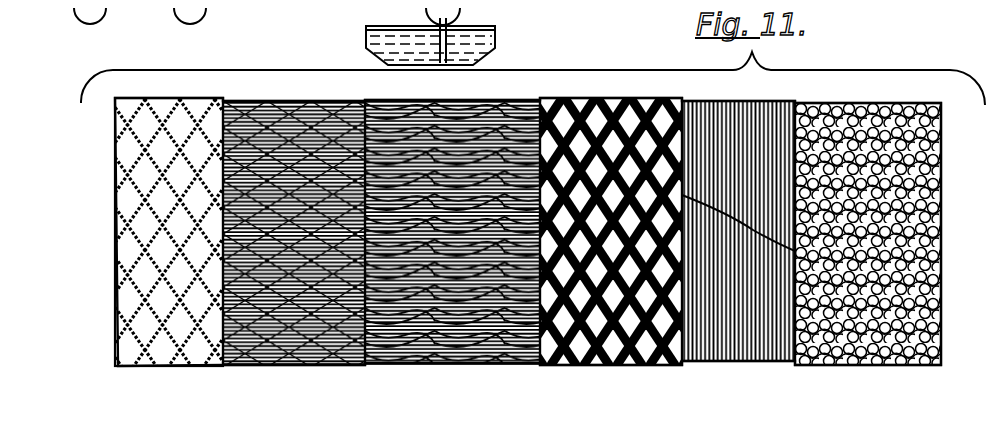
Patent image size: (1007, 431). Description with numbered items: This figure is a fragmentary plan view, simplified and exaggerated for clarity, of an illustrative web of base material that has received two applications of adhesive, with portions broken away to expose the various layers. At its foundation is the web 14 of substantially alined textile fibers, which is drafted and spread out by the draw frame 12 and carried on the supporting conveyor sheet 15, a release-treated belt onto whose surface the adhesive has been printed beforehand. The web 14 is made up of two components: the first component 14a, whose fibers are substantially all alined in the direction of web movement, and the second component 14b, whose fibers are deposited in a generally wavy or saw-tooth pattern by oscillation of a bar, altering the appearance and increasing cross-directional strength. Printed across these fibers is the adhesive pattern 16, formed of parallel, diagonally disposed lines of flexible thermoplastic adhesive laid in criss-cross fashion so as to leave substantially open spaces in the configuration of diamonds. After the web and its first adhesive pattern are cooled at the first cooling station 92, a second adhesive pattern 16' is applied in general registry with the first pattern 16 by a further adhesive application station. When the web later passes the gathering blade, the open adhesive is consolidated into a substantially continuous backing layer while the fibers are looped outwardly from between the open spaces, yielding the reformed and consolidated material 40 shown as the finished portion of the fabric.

The draw frame 12 is at (815, 77).
The web 14 is at (368, 363).
The first component of the web 14a is at (311, 93).
The second component of the web 14b is at (476, 93).
The supporting conveyor sheet 15 is at (127, 202).
The adhesive pattern 16 is at (421, 218).
The second adhesive pattern 16' is at (716, 233).
The reformed and consolidated material 40 is at (931, 178).
The first cooling station 92 is at (126, 0).